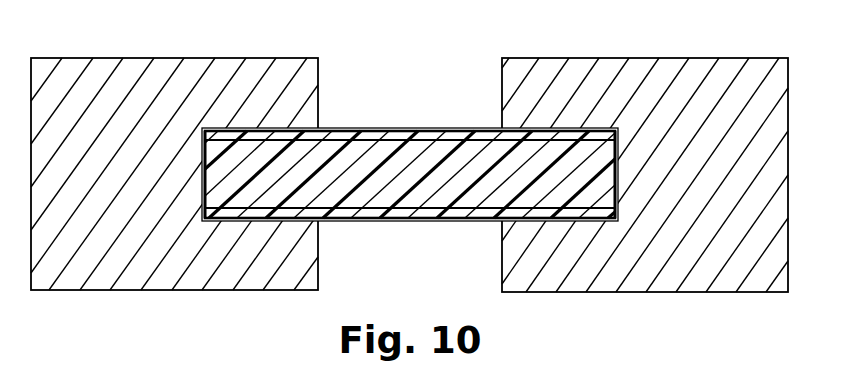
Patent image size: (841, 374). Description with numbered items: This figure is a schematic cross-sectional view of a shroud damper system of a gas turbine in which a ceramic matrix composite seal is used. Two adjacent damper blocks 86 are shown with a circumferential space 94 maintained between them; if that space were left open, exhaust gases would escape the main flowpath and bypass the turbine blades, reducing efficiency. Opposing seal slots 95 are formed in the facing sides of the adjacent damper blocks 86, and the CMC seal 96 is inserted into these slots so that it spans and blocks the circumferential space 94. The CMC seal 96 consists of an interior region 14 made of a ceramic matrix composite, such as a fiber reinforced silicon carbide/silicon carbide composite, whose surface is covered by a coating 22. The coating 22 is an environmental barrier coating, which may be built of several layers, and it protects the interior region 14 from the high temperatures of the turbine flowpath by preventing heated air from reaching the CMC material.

The interior region 14 is at (364, 170).
The coating 22 is at (428, 214).
The damper block 86 is at (152, 227).
The circumferential space 94 is at (385, 256).
The seal slot 95 is at (204, 187).
The CMC seal 96 is at (410, 110).